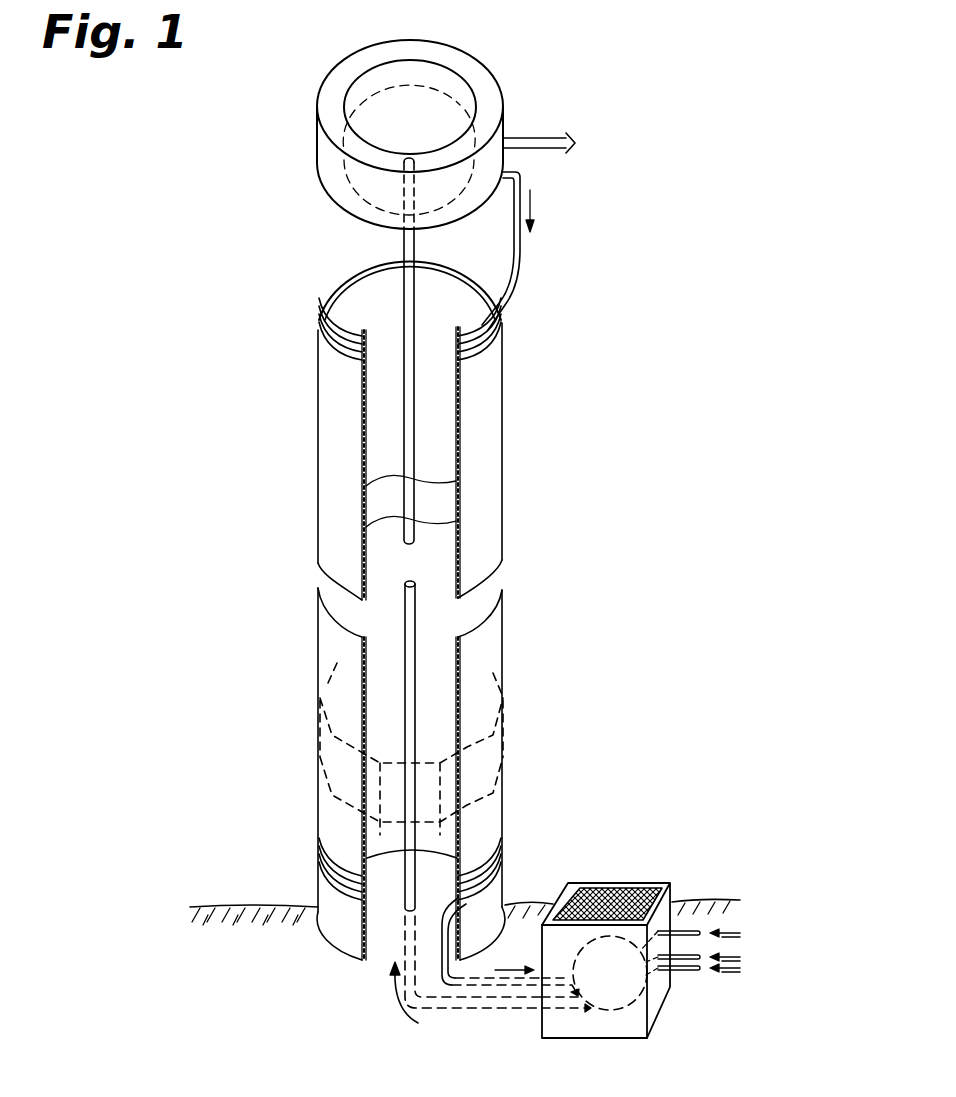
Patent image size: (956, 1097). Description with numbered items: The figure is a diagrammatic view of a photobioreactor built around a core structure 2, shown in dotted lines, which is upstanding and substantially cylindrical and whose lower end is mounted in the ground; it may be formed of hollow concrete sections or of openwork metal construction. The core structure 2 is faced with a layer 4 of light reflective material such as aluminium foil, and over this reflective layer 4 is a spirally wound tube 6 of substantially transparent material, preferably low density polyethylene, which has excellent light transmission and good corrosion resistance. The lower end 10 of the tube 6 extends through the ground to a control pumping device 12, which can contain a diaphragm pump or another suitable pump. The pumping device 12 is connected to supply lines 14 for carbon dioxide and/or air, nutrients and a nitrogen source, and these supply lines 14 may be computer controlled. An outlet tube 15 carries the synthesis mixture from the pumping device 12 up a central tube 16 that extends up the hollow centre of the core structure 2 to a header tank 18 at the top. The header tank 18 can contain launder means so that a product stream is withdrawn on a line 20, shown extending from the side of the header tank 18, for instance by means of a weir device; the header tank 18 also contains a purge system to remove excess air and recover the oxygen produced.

The core structure 2 is at (320, 698).
The layer of light reflective material 4 is at (455, 392).
The spirally wound tube 6 is at (318, 326).
The lower end of the tube 10 is at (498, 1008).
The control pumping device 12 is at (602, 883).
The supply lines 14 is at (690, 963).
The outlet tube 15 is at (467, 1007).
The central tube 16 is at (415, 268).
The header tank 18 is at (317, 138).
The line 20 is at (542, 140).